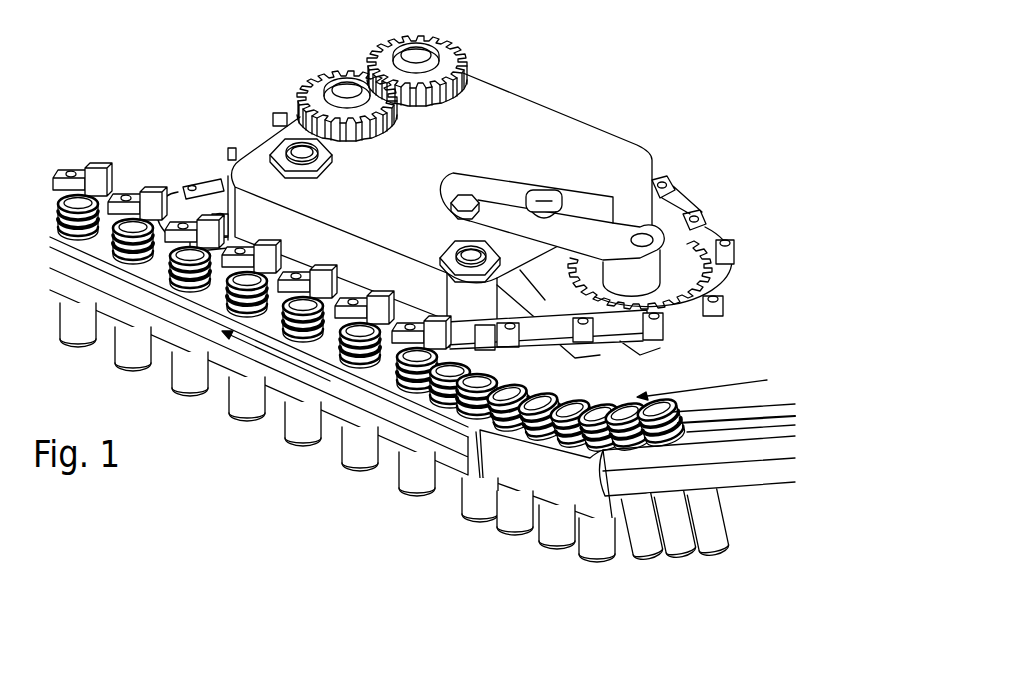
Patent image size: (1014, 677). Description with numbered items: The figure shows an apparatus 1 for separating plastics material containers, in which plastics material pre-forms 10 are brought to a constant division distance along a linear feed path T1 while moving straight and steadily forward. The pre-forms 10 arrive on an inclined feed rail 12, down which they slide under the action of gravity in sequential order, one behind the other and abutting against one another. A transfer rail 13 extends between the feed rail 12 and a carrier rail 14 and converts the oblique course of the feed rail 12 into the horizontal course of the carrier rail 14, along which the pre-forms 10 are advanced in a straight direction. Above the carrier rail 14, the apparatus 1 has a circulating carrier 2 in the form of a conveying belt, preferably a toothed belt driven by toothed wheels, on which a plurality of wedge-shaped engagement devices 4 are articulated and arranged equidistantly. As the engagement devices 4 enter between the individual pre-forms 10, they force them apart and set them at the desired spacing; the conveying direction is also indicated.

The apparatus 1 is at (166, 137).
The circulating carrier 2 is at (718, 280).
The engagement devices 4 is at (382, 357).
The plastics material pre-forms 10 is at (447, 497).
The feed rail 12 is at (767, 448).
The transfer rail 13 is at (531, 465).
The carrier rail 14 is at (425, 403).
The linear feed path T1 is at (262, 432).